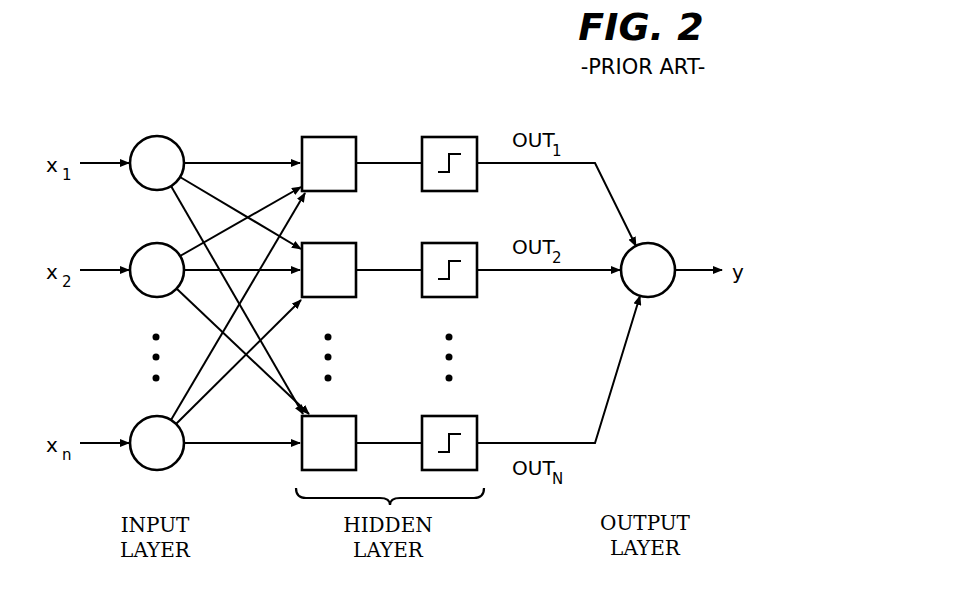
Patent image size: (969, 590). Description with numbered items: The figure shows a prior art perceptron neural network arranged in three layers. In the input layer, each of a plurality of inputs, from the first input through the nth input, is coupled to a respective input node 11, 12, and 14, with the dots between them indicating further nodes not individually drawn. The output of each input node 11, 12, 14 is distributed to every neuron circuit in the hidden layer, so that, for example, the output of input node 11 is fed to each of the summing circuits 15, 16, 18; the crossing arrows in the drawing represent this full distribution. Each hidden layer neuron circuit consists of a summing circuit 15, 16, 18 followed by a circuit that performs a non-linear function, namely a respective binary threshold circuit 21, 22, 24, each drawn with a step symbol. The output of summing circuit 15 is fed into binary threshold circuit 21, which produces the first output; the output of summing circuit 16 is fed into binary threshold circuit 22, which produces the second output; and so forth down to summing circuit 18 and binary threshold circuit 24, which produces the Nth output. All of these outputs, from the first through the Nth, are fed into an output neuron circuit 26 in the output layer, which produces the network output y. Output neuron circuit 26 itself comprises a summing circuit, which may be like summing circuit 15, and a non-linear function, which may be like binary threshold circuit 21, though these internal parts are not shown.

The input node 11 is at (140, 145).
The input node 12 is at (140, 252).
The input node 14 is at (140, 425).
The summing circuit 15 is at (340, 137).
The summing circuit 16 is at (342, 297).
The summing circuit 18 is at (344, 416).
The binary threshold circuit 21 is at (460, 137).
The binary threshold circuit 22 is at (465, 297).
The binary threshold circuit 24 is at (467, 416).
The output neuron circuit 26 is at (667, 251).